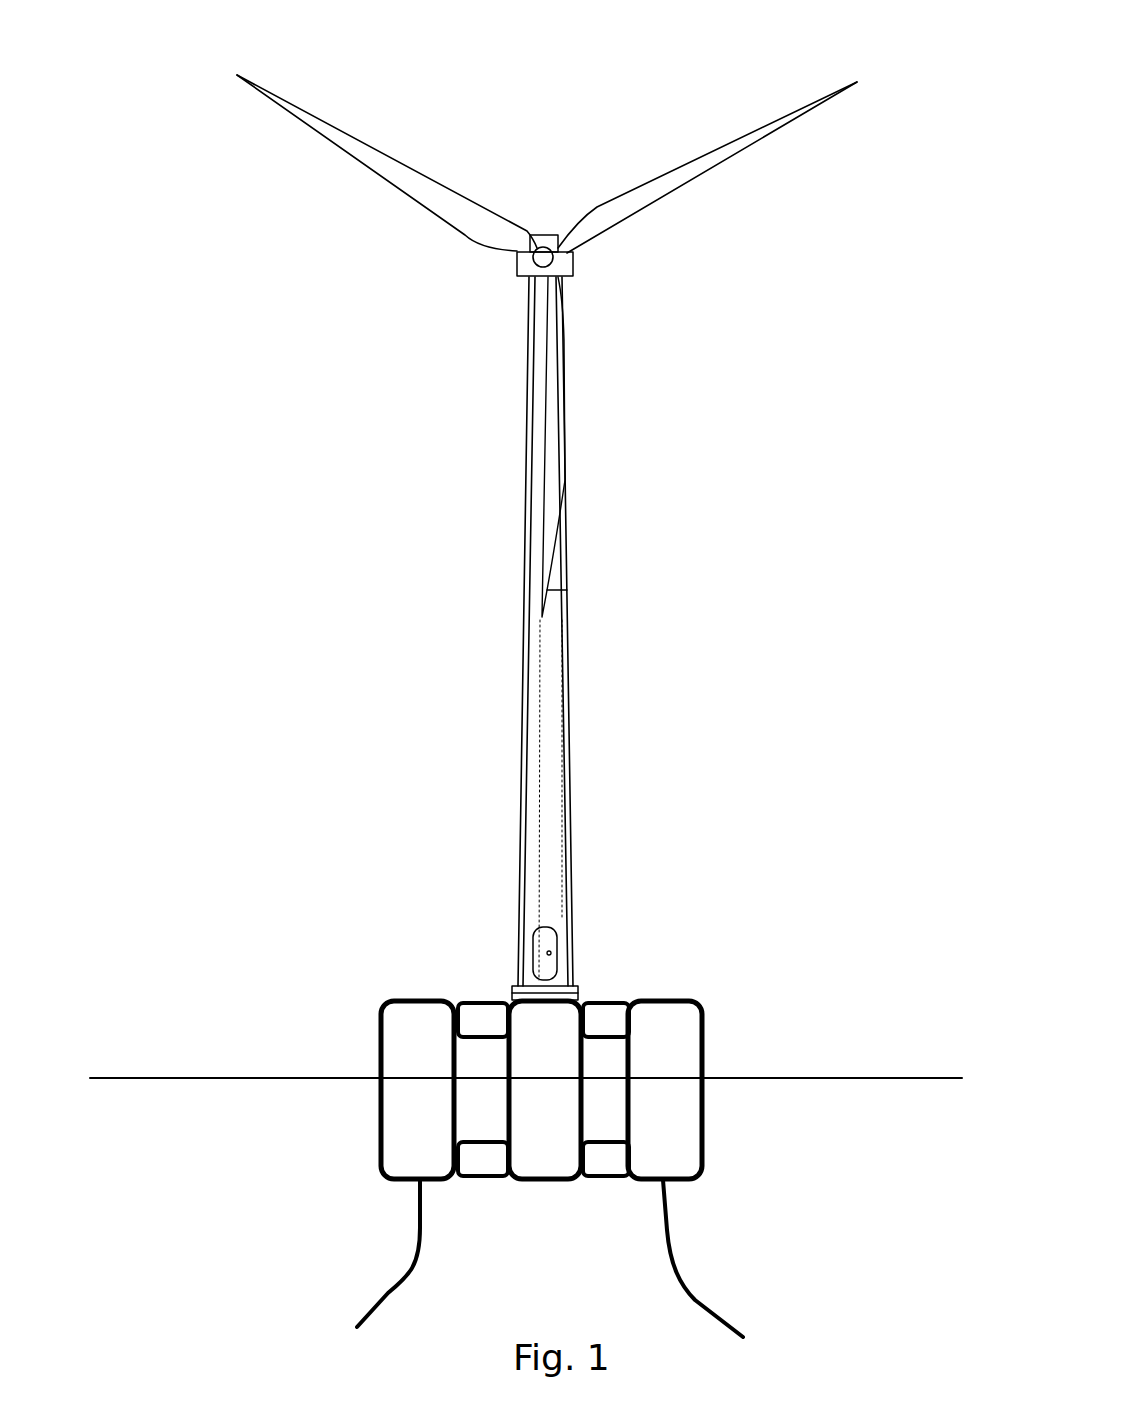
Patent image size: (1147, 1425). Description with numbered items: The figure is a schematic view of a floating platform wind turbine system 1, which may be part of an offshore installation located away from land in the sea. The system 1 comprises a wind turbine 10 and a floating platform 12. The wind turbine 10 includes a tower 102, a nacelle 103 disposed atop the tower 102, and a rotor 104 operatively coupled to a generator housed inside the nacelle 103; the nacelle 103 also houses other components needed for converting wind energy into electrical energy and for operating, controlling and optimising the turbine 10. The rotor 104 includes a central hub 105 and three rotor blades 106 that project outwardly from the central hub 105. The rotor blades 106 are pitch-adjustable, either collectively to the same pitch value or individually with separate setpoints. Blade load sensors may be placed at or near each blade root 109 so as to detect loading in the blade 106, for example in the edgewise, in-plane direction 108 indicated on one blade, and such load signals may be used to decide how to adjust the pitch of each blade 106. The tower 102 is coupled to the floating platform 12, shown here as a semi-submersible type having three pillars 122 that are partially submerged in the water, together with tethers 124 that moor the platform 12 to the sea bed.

The floating platform wind turbine system 1 is at (176, 256).
The wind turbine 10 is at (623, 82).
The floating platform 12 is at (243, 1158).
The tower 102 is at (553, 673).
The nacelle 103 is at (525, 270).
The rotor 104 is at (582, 322).
The central hub 105 is at (545, 259).
The rotor blades 106 is at (730, 150).
The edgewise direction 108 is at (327, 82).
The blade root 109 is at (531, 246).
The pillars 122 is at (380, 1027).
The tethers 124 is at (377, 1303).